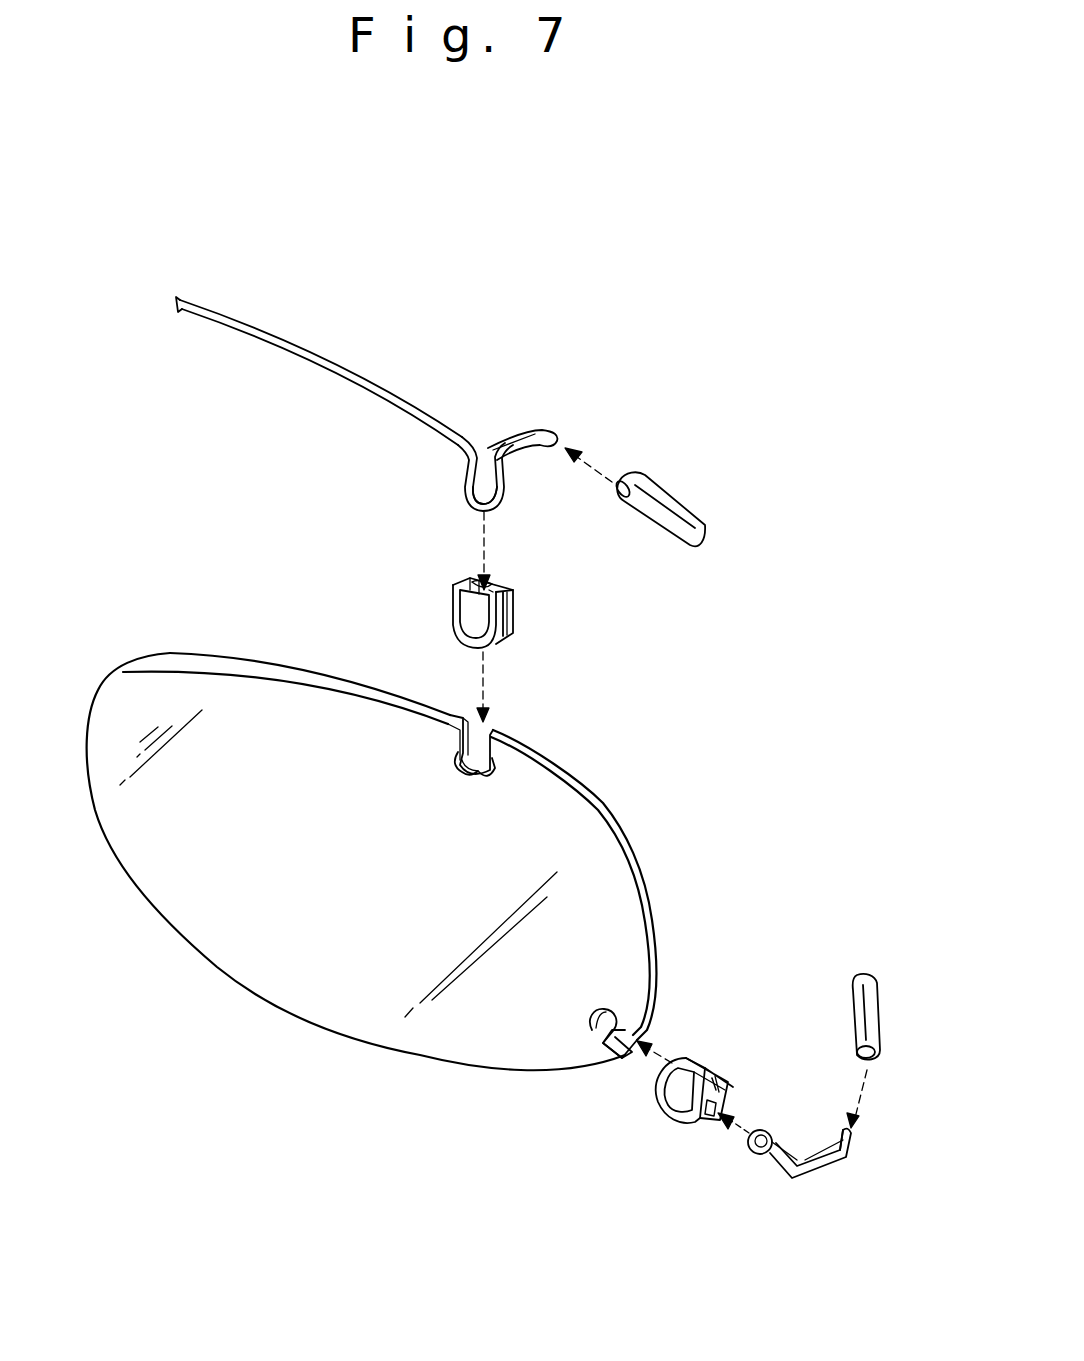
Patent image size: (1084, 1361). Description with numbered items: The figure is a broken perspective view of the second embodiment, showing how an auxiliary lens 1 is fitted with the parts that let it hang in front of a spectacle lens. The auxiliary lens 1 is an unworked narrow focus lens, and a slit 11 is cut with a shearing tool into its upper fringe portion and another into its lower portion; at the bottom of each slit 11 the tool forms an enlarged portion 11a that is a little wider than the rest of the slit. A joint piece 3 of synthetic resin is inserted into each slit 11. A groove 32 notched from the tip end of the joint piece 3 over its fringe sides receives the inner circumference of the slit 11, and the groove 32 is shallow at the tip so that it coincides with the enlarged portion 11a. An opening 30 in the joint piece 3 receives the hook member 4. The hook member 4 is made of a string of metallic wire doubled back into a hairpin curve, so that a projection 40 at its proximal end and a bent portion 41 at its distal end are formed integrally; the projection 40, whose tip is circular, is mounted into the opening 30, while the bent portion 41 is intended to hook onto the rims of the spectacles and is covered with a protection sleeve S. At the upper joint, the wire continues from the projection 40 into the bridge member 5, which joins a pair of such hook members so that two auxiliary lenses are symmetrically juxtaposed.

The auxiliary lens 1 is at (610, 912).
The slit 11 is at (495, 730).
The enlarged portion 11a is at (487, 778).
The joint piece 3 is at (587, 867).
The opening 30 is at (505, 588).
The groove 32 is at (712, 1080).
The hook member 4 is at (699, 782).
The projection 40 is at (758, 1156).
The bent portion 41 is at (555, 435).
The bridge member 5 is at (273, 325).
The protection sleeve S is at (672, 482).